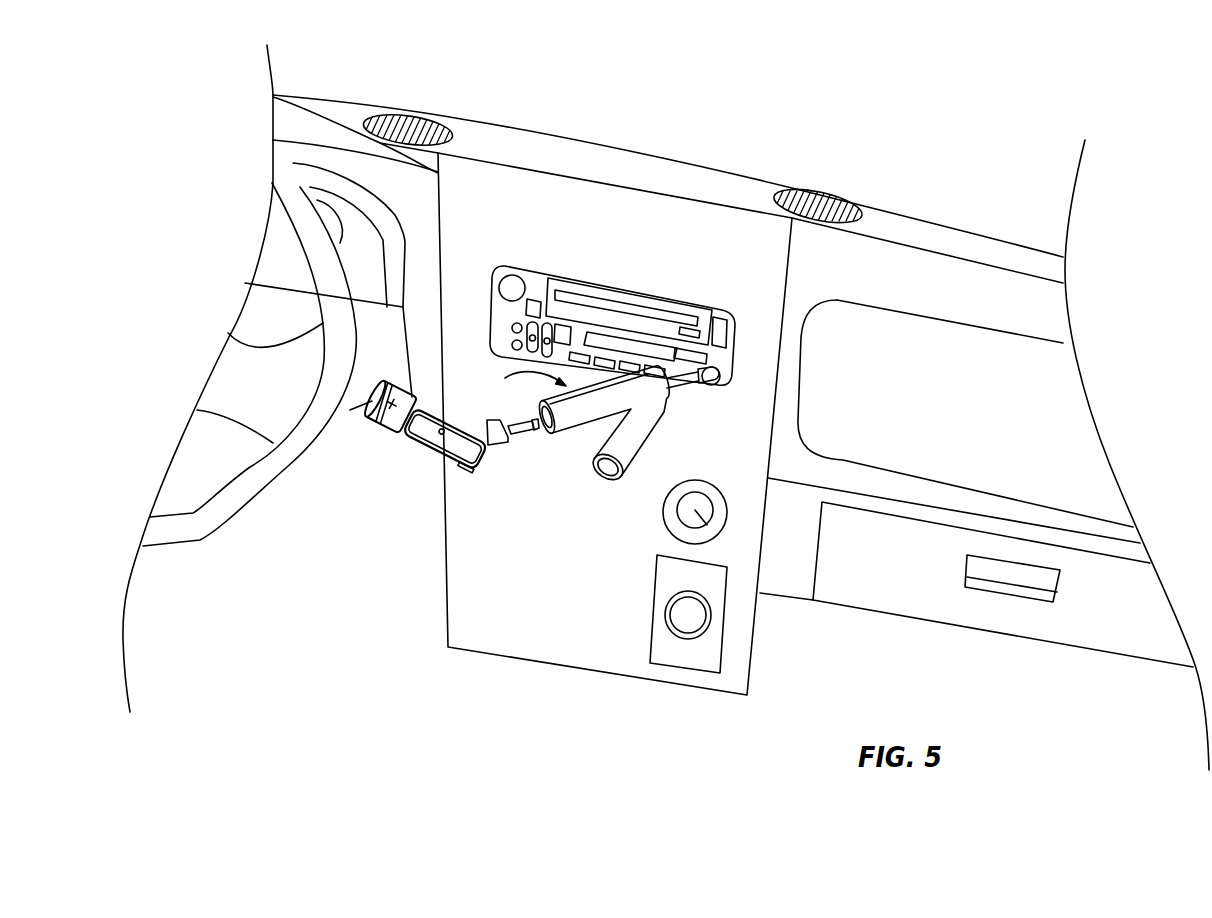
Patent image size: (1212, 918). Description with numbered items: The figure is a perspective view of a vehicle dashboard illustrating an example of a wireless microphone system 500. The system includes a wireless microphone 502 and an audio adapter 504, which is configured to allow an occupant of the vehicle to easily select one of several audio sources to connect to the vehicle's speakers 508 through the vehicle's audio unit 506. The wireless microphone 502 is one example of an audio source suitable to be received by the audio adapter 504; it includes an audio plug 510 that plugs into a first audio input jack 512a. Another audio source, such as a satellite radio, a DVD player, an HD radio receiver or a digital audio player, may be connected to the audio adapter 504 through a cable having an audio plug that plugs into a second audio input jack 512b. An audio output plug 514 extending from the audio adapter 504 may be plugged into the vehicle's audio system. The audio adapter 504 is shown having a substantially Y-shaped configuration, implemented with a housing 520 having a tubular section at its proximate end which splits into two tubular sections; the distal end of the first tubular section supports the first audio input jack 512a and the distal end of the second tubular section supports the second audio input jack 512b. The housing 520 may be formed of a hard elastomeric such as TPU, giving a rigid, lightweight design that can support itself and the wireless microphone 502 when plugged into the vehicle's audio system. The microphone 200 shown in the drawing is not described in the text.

The wireless microphone 200 is at (405, 436).
The wireless microphone system 500 is at (544, 512).
The wireless microphone 502 is at (684, 454).
The audio adapter 504 is at (517, 385).
The audio unit 506 is at (718, 380).
The speakers 508 is at (462, 121).
The audio plug 510 is at (510, 441).
The first audio input jack 512a is at (602, 422).
The second audio input jack 512b is at (617, 475).
The audio output plug 514 is at (713, 383).
The housing 520 is at (647, 408).